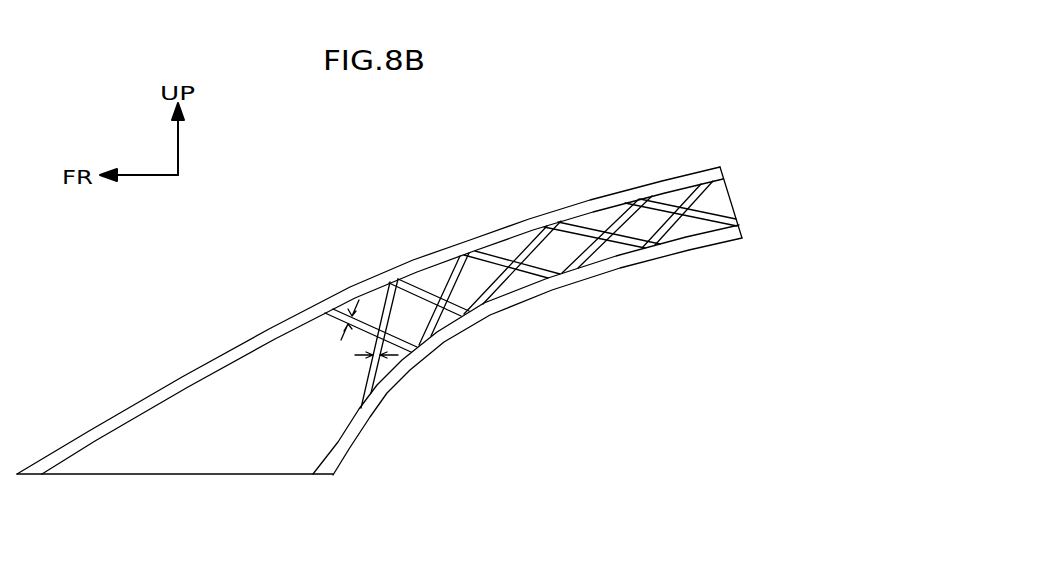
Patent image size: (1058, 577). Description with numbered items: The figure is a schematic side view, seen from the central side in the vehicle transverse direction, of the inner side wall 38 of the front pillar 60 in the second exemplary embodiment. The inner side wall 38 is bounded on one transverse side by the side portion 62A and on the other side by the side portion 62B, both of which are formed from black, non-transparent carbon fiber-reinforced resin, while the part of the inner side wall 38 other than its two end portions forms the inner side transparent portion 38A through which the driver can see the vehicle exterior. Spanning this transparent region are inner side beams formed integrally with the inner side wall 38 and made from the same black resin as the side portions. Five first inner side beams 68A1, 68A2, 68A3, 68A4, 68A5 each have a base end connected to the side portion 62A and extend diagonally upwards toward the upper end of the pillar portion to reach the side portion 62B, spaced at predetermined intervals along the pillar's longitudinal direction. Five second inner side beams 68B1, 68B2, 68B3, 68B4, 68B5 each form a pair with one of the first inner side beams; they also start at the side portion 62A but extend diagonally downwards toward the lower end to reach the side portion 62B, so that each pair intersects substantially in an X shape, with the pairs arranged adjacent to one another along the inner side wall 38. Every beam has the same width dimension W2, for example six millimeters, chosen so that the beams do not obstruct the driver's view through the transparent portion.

The front pillar 60 is at (633, 157).
The side portion 62A is at (182, 376).
The side portion 62B is at (338, 442).
The inner side wall 38 is at (726, 204).
The inner side transparent portion 38A is at (223, 457).
The first inner side beam 68A1 is at (318, 322).
The first inner side beam 68A2 is at (412, 283).
The first inner side beam 68A3 is at (493, 253).
The first inner side beam 68A4 is at (580, 218).
The first inner side beam 68A5 is at (688, 190).
The second inner side beam 68B1 is at (388, 365).
The second inner side beam 68B2 is at (447, 343).
The second inner side beam 68B3 is at (511, 291).
The second inner side beam 68B4 is at (596, 258).
The second inner side beam 68B5 is at (677, 233).
The width dimension W2 is at (340, 341).